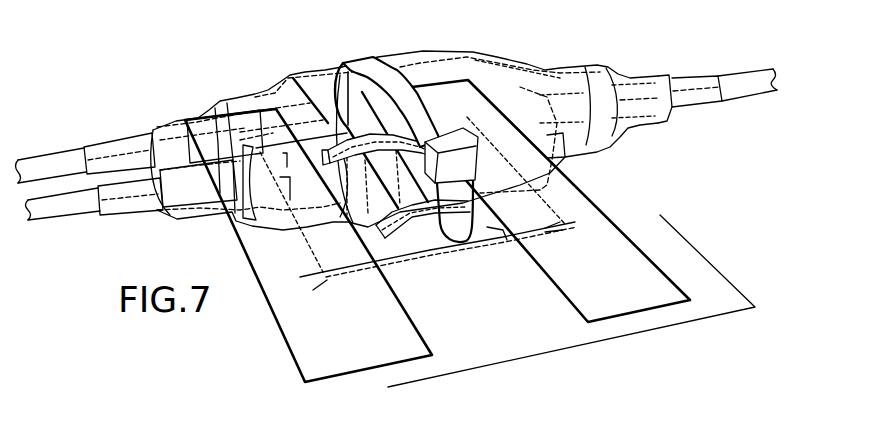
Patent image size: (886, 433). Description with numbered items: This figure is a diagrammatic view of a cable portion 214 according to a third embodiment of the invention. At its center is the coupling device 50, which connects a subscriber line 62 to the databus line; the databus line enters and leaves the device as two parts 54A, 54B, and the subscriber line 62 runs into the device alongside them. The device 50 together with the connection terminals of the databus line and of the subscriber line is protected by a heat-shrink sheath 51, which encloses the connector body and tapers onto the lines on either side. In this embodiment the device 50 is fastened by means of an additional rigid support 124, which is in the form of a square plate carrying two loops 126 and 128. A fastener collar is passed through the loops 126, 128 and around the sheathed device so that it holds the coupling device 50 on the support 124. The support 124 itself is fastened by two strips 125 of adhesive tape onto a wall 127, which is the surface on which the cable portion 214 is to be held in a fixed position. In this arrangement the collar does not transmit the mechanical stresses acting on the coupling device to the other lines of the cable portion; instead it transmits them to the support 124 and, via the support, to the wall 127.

The cable portion 214 is at (237, 70).
The coupling device 50 is at (222, 100).
The heat-shrink sheath 51 is at (495, 55).
The subscriber line 62 is at (50, 162).
The first part of the databus line 54A is at (55, 212).
The second part of the databus line 54B is at (747, 80).
The rigid support 124 is at (485, 227).
The strips of adhesive tape 125 is at (592, 279).
The loop 126 is at (392, 228).
The wall 127 is at (712, 288).
The loop 128 is at (343, 133).